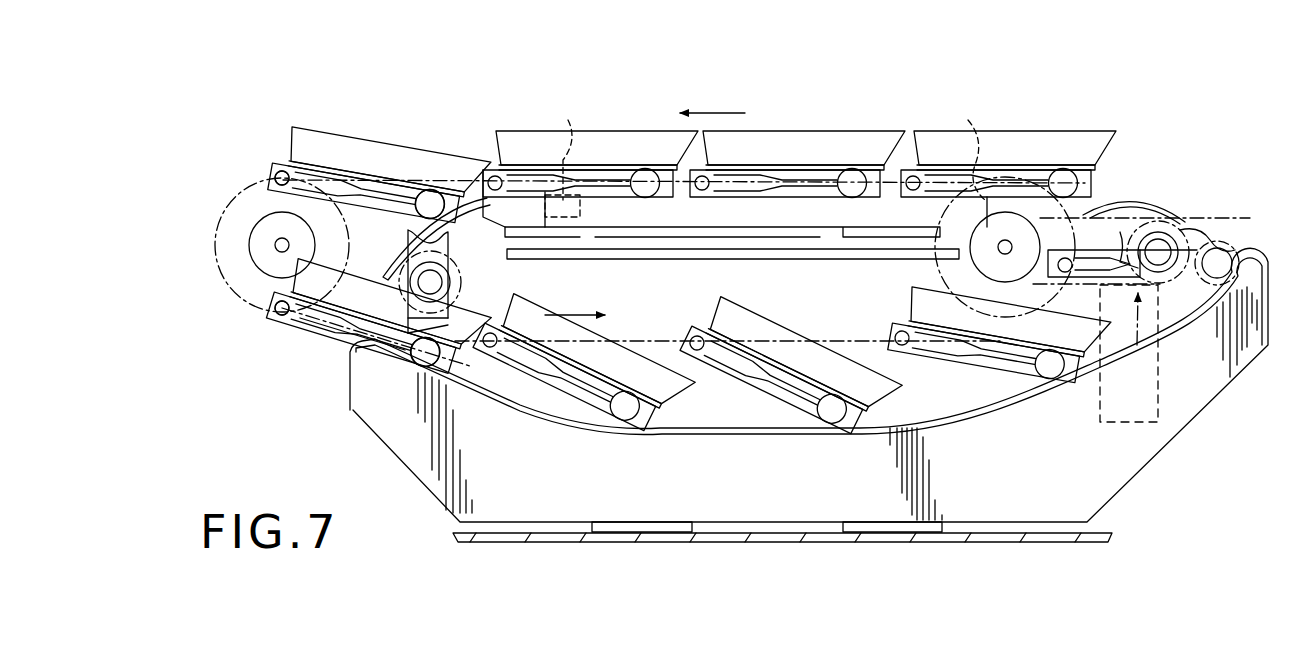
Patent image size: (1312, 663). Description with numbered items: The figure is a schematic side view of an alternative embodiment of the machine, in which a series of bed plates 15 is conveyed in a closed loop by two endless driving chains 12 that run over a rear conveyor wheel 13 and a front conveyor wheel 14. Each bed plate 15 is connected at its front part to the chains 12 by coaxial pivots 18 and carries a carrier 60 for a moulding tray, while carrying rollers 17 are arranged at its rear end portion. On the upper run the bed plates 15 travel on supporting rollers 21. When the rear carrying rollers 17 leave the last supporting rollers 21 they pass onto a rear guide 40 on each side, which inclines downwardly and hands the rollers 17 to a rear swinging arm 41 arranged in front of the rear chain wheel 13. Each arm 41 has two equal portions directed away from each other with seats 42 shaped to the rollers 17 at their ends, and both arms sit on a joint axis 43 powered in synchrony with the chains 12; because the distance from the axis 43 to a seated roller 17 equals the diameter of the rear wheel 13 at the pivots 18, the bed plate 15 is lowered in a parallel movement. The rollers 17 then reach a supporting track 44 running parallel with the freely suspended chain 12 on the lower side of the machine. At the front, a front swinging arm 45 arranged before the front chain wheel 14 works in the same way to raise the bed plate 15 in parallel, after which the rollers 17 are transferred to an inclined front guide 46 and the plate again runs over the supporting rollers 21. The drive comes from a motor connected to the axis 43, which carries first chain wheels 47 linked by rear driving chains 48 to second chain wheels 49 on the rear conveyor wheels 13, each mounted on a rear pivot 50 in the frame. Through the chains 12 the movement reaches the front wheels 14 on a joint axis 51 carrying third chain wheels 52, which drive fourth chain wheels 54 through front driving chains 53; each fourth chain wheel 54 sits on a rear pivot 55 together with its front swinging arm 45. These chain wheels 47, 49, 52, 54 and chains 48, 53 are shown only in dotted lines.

The driving chain 12 is at (601, 180).
The rear conveyor wheel 13 is at (226, 203).
The front conveyor wheel 14 is at (1041, 188).
The bed plate 15 is at (348, 185).
The carrying roller 17 is at (445, 190).
The pivot 18 is at (278, 172).
The supporting roller 21 is at (765, 158).
The rear guide 40 is at (483, 165).
The rear swinging arm 41 is at (450, 292).
The seat 42 is at (430, 192).
The joint axis 43 is at (451, 279).
The supporting track 44 is at (548, 426).
The front swinging arm 45 is at (1240, 248).
The front guide 46 is at (1140, 210).
The first chain wheel 47 is at (449, 250).
The rear driving chain 48 is at (335, 322).
The second chain wheel 49 is at (247, 245).
The rear pivot 50 is at (276, 252).
The joint axis 51 is at (1007, 243).
The third chain wheel 52 is at (975, 283).
The front driving chain 53 is at (1129, 353).
The fourth chain wheel 54 is at (1192, 240).
The rear pivot 55 is at (1162, 262).
The carrier 60 is at (818, 133).